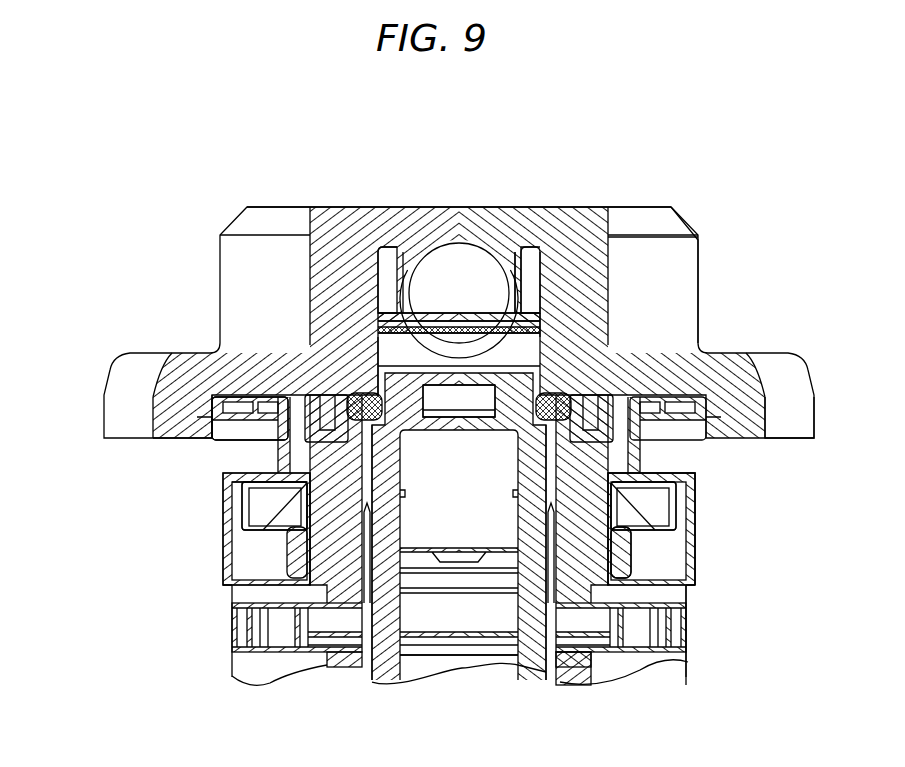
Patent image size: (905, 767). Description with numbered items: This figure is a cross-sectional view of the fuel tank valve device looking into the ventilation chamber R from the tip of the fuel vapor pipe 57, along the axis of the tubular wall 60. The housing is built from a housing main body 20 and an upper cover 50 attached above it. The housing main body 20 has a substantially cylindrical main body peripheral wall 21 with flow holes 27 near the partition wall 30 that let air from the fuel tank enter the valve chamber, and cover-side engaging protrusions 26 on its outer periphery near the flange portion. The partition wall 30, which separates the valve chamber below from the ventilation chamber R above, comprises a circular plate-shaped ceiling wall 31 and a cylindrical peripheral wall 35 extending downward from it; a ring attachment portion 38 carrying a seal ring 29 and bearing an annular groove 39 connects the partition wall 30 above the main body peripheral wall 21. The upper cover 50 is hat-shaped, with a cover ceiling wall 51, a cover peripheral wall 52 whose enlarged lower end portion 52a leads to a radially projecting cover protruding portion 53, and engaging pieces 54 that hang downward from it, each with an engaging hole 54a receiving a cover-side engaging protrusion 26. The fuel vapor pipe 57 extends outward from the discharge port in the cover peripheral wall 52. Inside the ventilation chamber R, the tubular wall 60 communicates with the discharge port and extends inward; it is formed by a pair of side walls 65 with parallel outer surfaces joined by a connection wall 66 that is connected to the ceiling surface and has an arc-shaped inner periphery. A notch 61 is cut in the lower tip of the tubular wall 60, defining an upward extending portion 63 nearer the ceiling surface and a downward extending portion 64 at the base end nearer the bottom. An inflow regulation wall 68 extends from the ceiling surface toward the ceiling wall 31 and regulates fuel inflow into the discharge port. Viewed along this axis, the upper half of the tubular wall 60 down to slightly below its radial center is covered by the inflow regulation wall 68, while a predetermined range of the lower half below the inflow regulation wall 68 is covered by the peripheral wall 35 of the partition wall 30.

The housing main body 20 is at (219, 658).
The main body peripheral wall 21 is at (677, 662).
The cover-side engaging protrusions 26 is at (250, 523).
The flow holes 27 is at (690, 665).
The seal ring 29 is at (697, 473).
The partition wall 30 is at (522, 250).
The ceiling wall 31 is at (405, 300).
The peripheral wall 35 is at (487, 322).
The ring attachment portion 38 is at (675, 495).
The annular groove 39 is at (240, 452).
The upper cover 50 is at (249, 196).
The cover ceiling wall 51 is at (527, 275).
The cover peripheral wall 52 is at (700, 233).
The lower end portion 52a is at (255, 440).
The cover protruding portion 53 is at (749, 377).
The engaging pieces 54 is at (240, 558).
The engaging hole 54a is at (247, 490).
The fuel vapor pipe 57 is at (698, 240).
The tubular wall 60 is at (549, 258).
The notch 61 is at (600, 336).
The upward extending portion 63 is at (388, 355).
The downward extending portion 64 is at (375, 280).
The side walls 65 is at (549, 297).
The connection wall 66 is at (445, 245).
The inflow regulation wall 68 is at (458, 262).
The ventilation chamber R is at (395, 246).